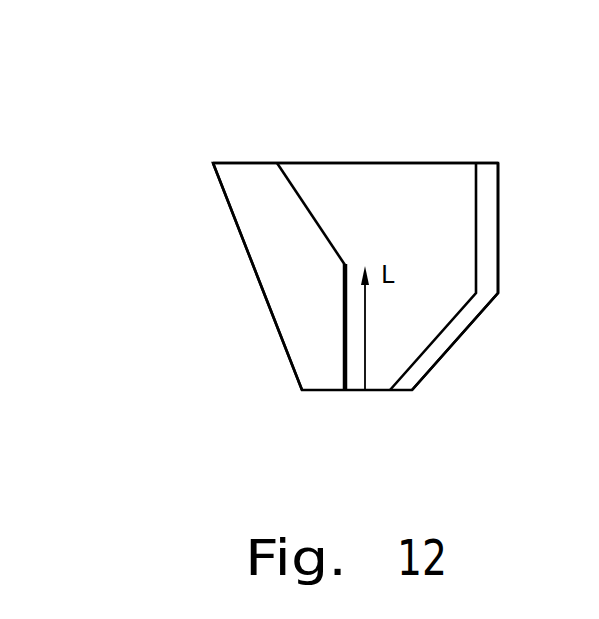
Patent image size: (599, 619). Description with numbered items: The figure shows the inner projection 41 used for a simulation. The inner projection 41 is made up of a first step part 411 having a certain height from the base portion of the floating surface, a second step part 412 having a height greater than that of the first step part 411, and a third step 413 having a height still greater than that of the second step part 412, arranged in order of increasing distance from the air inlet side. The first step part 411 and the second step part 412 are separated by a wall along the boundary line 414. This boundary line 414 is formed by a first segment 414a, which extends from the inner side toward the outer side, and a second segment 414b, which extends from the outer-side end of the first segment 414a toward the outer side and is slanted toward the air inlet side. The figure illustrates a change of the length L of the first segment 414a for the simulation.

The inner projection 41 is at (385, 74).
The first step part 411 is at (246, 203).
The second step part 412 is at (325, 180).
The third step 413 is at (486, 178).
The boundary line 414 is at (192, 276).
The first segment 414a is at (344, 333).
The second segment 414b is at (317, 227).